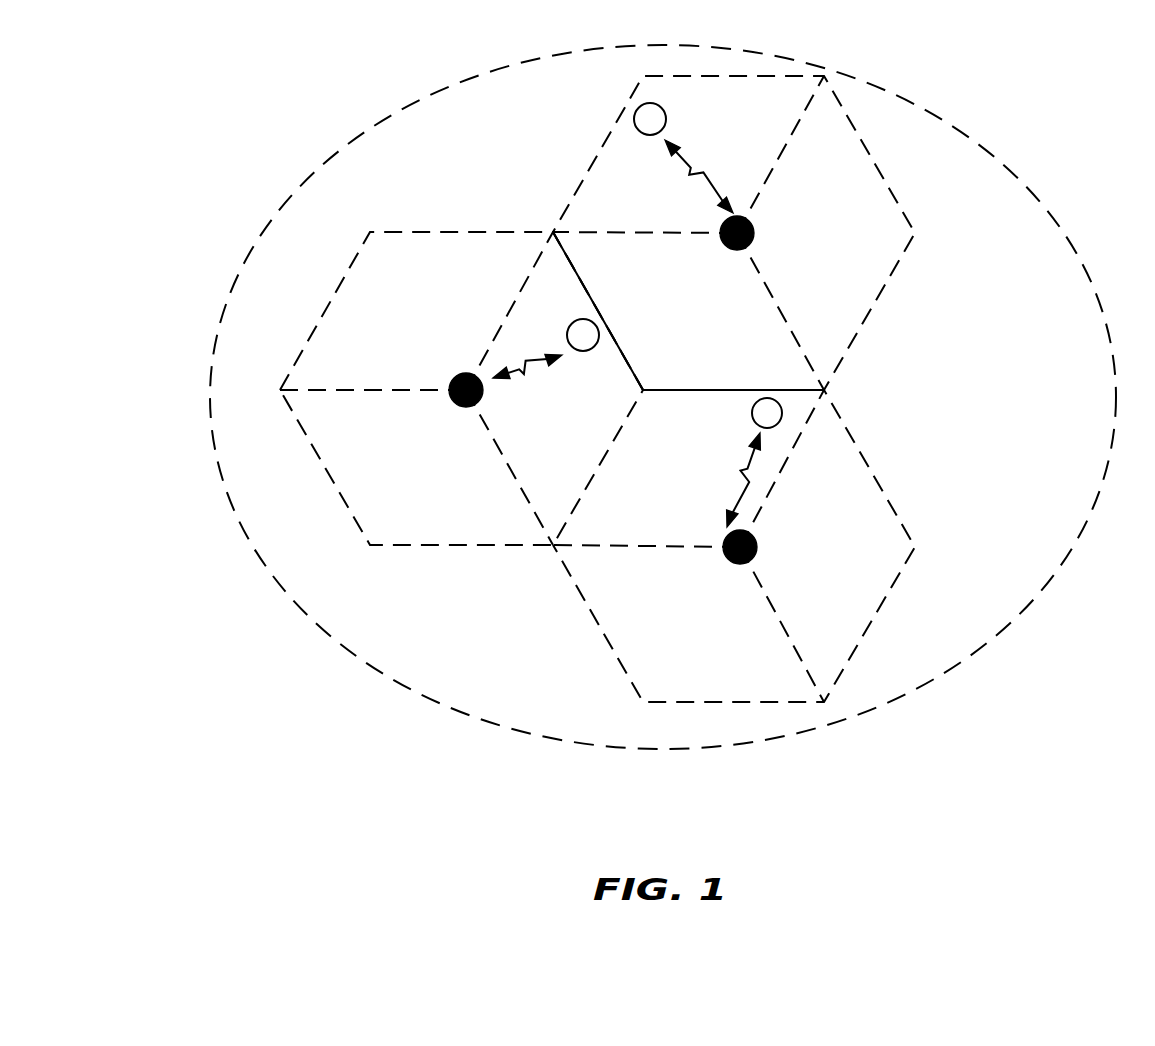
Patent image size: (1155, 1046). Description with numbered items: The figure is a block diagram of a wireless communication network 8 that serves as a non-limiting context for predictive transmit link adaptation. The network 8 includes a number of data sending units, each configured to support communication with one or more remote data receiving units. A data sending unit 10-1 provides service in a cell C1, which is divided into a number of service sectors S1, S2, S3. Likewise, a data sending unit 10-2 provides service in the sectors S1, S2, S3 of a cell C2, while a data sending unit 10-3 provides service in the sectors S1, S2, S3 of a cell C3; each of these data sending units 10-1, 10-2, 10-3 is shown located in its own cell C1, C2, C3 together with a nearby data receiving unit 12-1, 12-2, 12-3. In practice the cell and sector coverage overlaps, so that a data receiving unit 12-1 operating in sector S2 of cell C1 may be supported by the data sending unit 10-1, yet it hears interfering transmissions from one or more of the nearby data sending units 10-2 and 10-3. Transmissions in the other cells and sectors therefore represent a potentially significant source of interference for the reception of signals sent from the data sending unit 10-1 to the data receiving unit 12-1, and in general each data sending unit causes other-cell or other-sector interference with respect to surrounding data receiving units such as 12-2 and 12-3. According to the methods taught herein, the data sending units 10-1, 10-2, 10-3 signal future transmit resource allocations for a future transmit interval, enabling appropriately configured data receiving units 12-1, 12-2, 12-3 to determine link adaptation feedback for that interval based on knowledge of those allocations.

The wireless communication network 8 is at (210, 385).
The data sending unit 10-1 is at (467, 407).
The data sending unit 10-2 is at (752, 229).
The data sending unit 10-3 is at (740, 565).
The data receiving unit 12-1 is at (584, 351).
The data receiving unit 12-2 is at (645, 134).
The data receiving unit 12-3 is at (781, 412).
The cell C1 is at (337, 480).
The cell C2 is at (887, 280).
The cell C3 is at (870, 477).
The service sector S1 is at (578, 259).
The service sector S2 is at (692, 488).
The service sector S3 is at (533, 525).